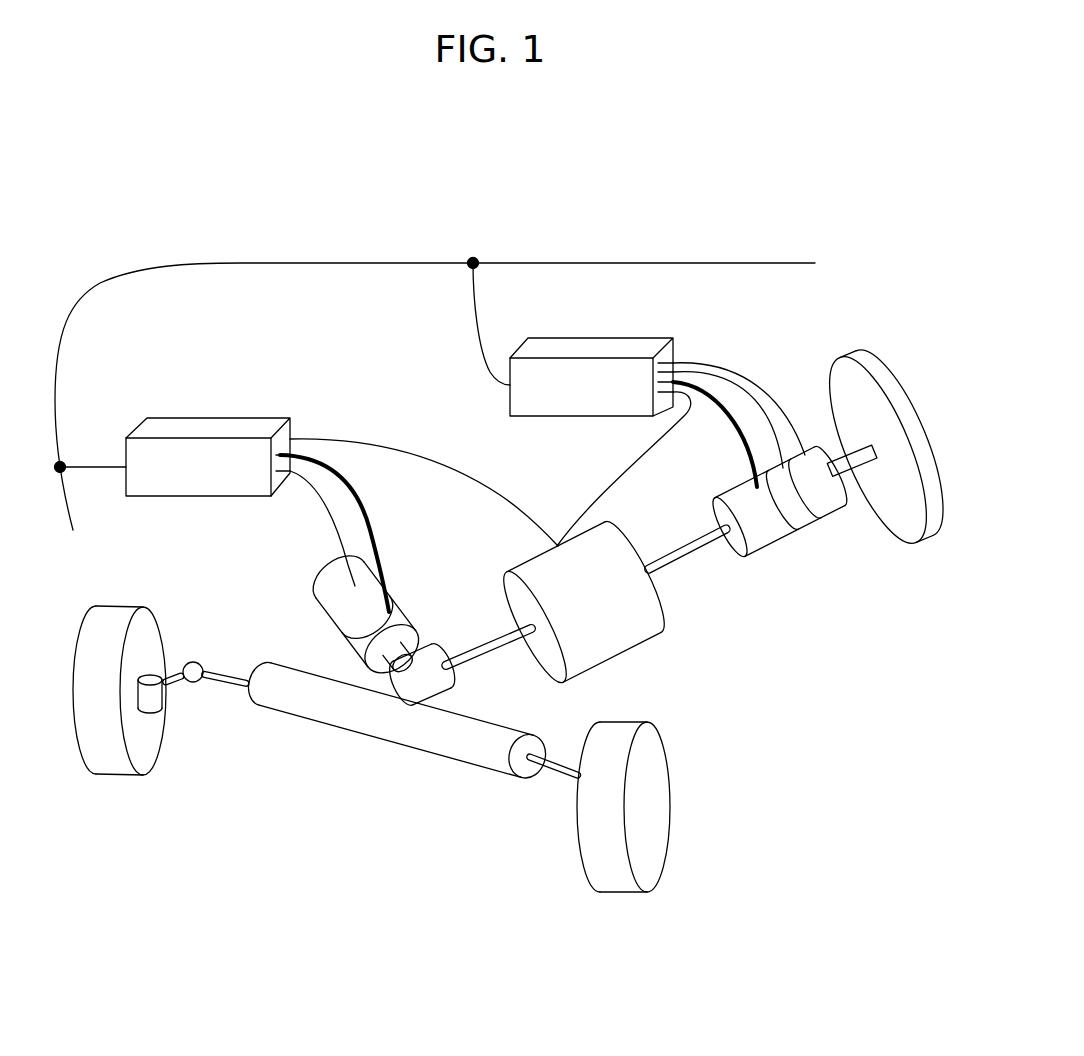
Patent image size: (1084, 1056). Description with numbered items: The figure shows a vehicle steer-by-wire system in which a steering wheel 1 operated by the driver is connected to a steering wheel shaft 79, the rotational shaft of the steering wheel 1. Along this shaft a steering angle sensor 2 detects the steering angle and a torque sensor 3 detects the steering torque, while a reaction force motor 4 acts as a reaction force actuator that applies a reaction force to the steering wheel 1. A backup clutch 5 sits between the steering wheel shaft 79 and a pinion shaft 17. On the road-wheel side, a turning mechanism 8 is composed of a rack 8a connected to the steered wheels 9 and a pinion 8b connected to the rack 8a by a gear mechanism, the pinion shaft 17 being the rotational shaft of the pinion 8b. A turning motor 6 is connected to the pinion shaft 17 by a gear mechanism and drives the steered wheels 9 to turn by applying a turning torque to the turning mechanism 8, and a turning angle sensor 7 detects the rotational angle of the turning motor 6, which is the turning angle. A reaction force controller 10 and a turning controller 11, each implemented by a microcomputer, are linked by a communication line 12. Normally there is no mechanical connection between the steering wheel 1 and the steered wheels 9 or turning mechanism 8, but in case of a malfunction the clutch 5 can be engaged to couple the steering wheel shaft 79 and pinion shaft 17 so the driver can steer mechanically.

The steering wheel 1 is at (870, 430).
The steering angle sensor 2 is at (842, 513).
The torque sensor 3 is at (808, 517).
The reaction force motor 4 is at (768, 547).
The backup clutch 5 is at (645, 640).
The turning motor 6 is at (402, 618).
The turning angle sensor 7 is at (338, 593).
The turning mechanism 8 is at (320, 777).
The rack 8a is at (407, 752).
The pinion 8b is at (440, 690).
The steered wheels 9 is at (160, 752).
The reaction force controller 10 is at (607, 348).
The turning controller 11 is at (194, 427).
The communication line 12 is at (262, 263).
The pinion shaft 17 is at (483, 650).
The steering wheel shaft 79 is at (687, 557).